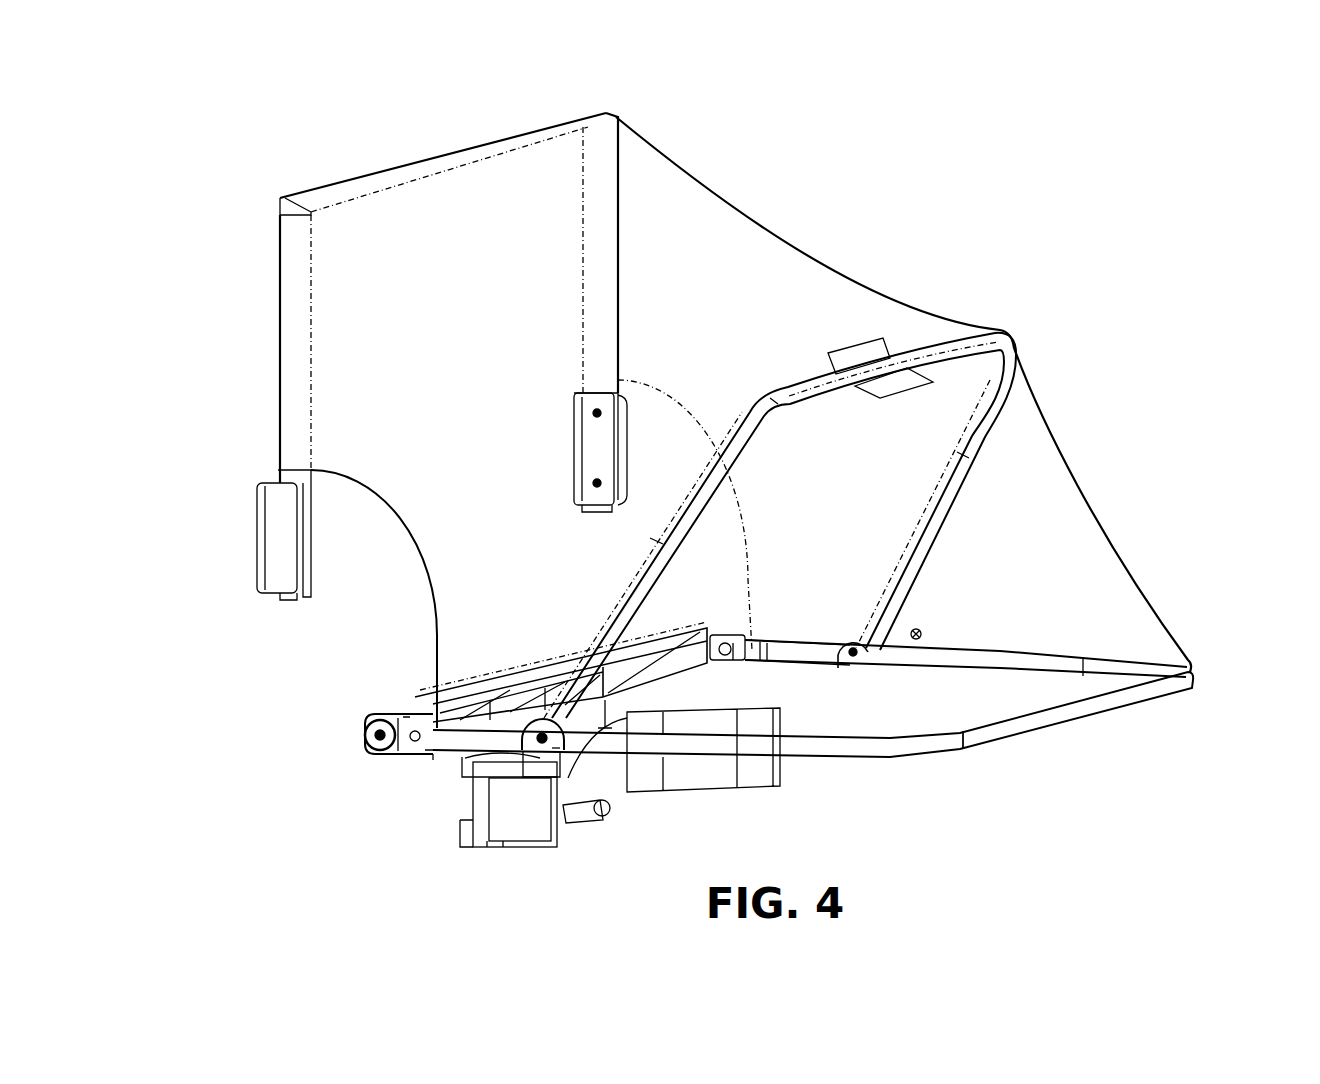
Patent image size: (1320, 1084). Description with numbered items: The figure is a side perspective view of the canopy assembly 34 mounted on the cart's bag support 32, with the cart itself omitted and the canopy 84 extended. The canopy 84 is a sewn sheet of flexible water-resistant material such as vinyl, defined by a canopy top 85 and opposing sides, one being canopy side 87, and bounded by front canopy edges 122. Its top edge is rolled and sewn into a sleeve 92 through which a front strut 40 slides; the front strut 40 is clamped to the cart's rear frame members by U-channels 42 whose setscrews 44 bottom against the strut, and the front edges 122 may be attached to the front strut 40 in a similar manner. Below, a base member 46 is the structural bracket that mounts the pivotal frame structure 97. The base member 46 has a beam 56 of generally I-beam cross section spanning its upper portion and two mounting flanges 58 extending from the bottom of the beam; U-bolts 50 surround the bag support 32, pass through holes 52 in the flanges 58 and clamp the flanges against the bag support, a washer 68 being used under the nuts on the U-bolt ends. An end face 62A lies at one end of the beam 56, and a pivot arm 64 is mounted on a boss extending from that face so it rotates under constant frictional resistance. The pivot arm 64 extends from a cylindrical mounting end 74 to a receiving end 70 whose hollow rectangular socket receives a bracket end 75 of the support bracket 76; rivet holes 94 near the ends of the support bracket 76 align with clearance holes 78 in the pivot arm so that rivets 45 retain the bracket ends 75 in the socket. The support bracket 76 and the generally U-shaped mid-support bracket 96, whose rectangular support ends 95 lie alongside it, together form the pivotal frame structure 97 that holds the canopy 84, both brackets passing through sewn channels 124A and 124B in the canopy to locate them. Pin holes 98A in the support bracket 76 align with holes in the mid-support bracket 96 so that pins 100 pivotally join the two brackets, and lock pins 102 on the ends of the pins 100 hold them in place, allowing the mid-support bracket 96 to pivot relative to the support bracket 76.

The bag support 32 is at (540, 825).
The canopy assembly 34 is at (1133, 708).
The front strut 40 is at (597, 205).
The U-channels 42 is at (275, 538).
The setscrews 44 is at (597, 483).
The rivets 45 is at (757, 648).
The base member 46 is at (507, 650).
The U-bolts 50 is at (628, 780).
The holes 52 is at (610, 808).
The beam 56 is at (578, 700).
The flanges 58 is at (470, 822).
The end face 62A is at (370, 725).
The pivot arm 64 is at (403, 717).
The washer 68 is at (395, 750).
The receiving end 70 is at (737, 660).
The cylindrical mounting end 74 is at (370, 740).
The bracket ends 75 is at (763, 652).
The support bracket 76 is at (558, 748).
The clearance holes 78 is at (405, 758).
The canopy 84 is at (1065, 455).
The canopy top 85 is at (760, 272).
The canopy side 87 is at (385, 318).
The sleeve 92 is at (375, 175).
The rivet holes 94 is at (722, 645).
The support ends 95 is at (540, 715).
The mid-support bracket 96 is at (980, 333).
The pivotal frame structure 97 is at (953, 585).
The pin holes 98A is at (862, 655).
The pins 100 is at (921, 634).
The lock pins 102 is at (795, 665).
The front canopy edges 122 is at (278, 353).
The sewn channel 124A is at (1012, 730).
The sewn channel 124B is at (862, 355).